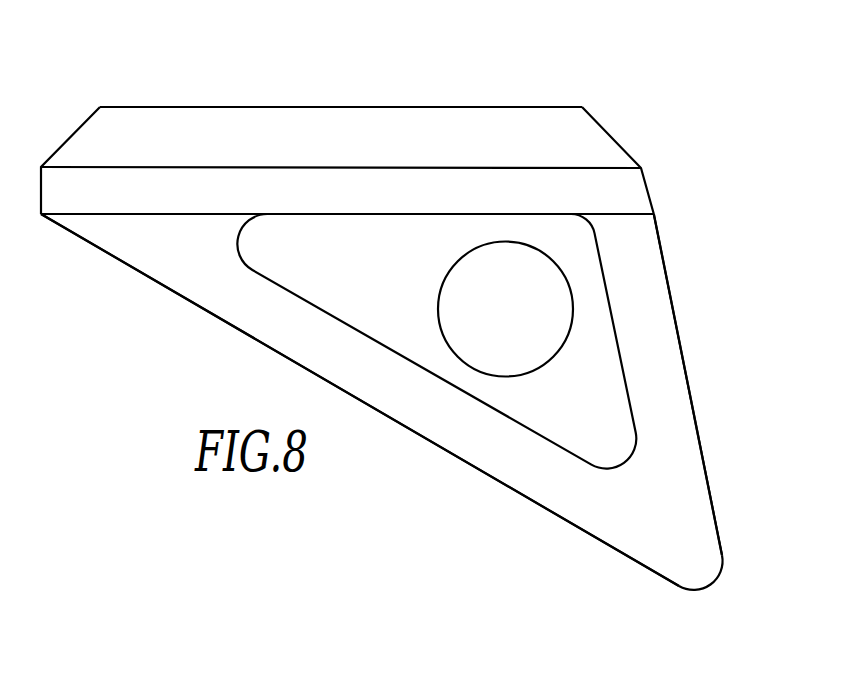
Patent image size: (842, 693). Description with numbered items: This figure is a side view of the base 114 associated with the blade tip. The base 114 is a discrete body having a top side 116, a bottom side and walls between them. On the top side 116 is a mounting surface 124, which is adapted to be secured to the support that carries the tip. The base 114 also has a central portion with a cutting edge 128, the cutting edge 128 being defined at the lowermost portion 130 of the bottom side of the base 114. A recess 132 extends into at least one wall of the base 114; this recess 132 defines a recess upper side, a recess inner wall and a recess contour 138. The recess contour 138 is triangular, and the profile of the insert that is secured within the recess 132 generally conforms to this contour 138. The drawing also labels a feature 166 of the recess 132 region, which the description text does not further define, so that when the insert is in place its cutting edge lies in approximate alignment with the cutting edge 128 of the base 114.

The base 114 is at (408, 326).
The top side 116 is at (163, 122).
The mounting surface 124 is at (337, 108).
The opening in side web 166 is at (573, 260).
The recess 132 is at (653, 315).
The recess contour 138 is at (685, 432).
The lowermost portion 130 is at (660, 562).
The cutting edge 128 is at (708, 590).